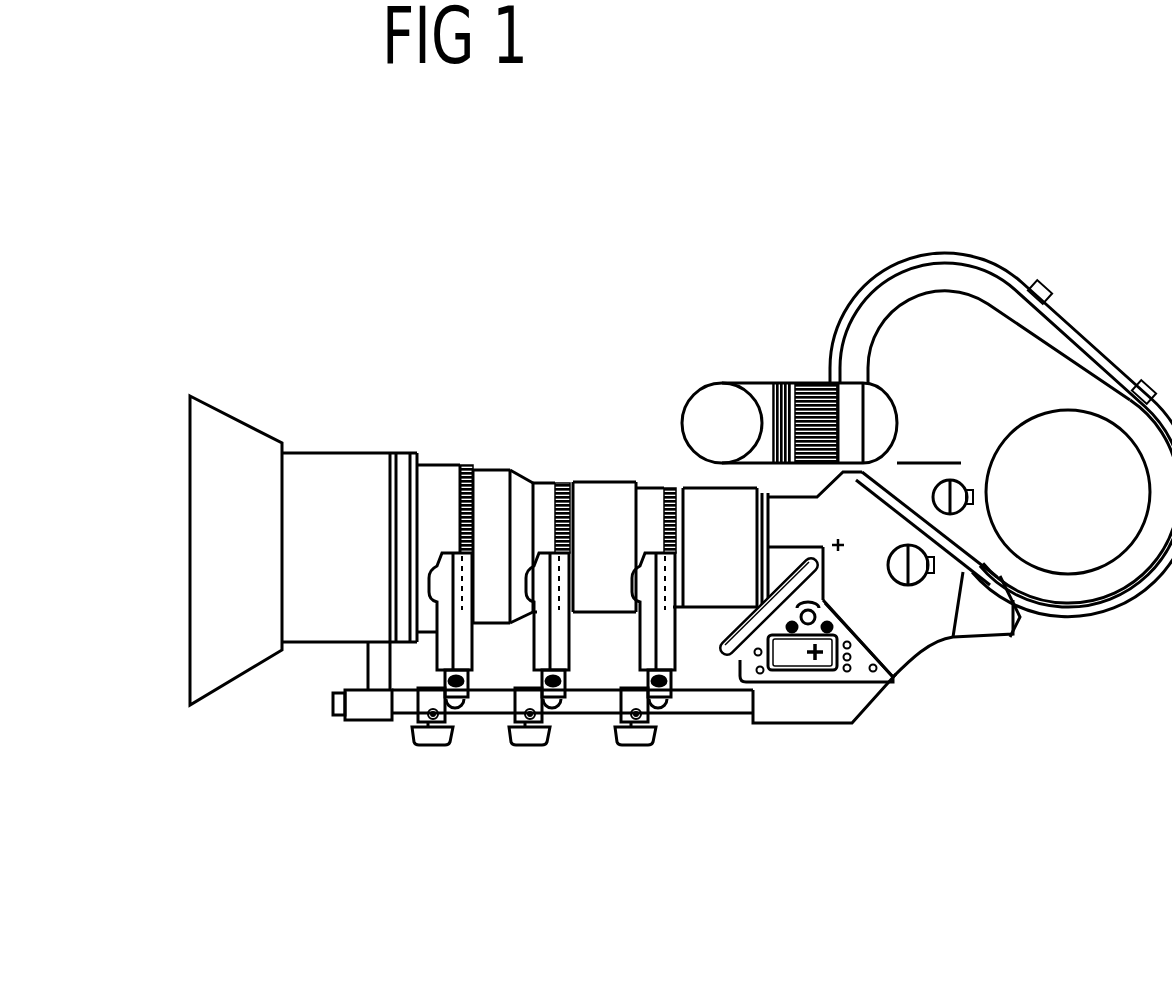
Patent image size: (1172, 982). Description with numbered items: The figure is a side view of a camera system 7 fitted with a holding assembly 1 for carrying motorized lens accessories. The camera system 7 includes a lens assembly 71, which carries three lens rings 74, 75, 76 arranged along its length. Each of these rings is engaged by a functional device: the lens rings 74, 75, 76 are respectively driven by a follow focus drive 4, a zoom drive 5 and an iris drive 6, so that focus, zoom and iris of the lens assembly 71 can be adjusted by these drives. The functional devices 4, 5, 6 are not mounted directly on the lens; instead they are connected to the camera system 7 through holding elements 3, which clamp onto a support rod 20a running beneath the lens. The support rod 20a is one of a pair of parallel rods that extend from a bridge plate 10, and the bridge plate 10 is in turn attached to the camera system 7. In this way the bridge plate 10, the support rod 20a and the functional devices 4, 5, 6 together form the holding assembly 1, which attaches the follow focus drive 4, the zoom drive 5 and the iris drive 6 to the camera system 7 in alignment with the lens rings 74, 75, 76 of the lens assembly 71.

The holding assembly 1 is at (655, 777).
The holding elements 3 is at (413, 720).
The follow focus drive 4 is at (438, 585).
The zoom drive 5 is at (540, 580).
The iris drive 6 is at (650, 580).
The camera system 7 is at (1053, 270).
The bridge plate 10 is at (828, 683).
The support rod 20a is at (722, 703).
The lens assembly 71 is at (298, 437).
The lens ring 74 is at (468, 468).
The lens ring 75 is at (562, 480).
The lens ring 76 is at (671, 480).